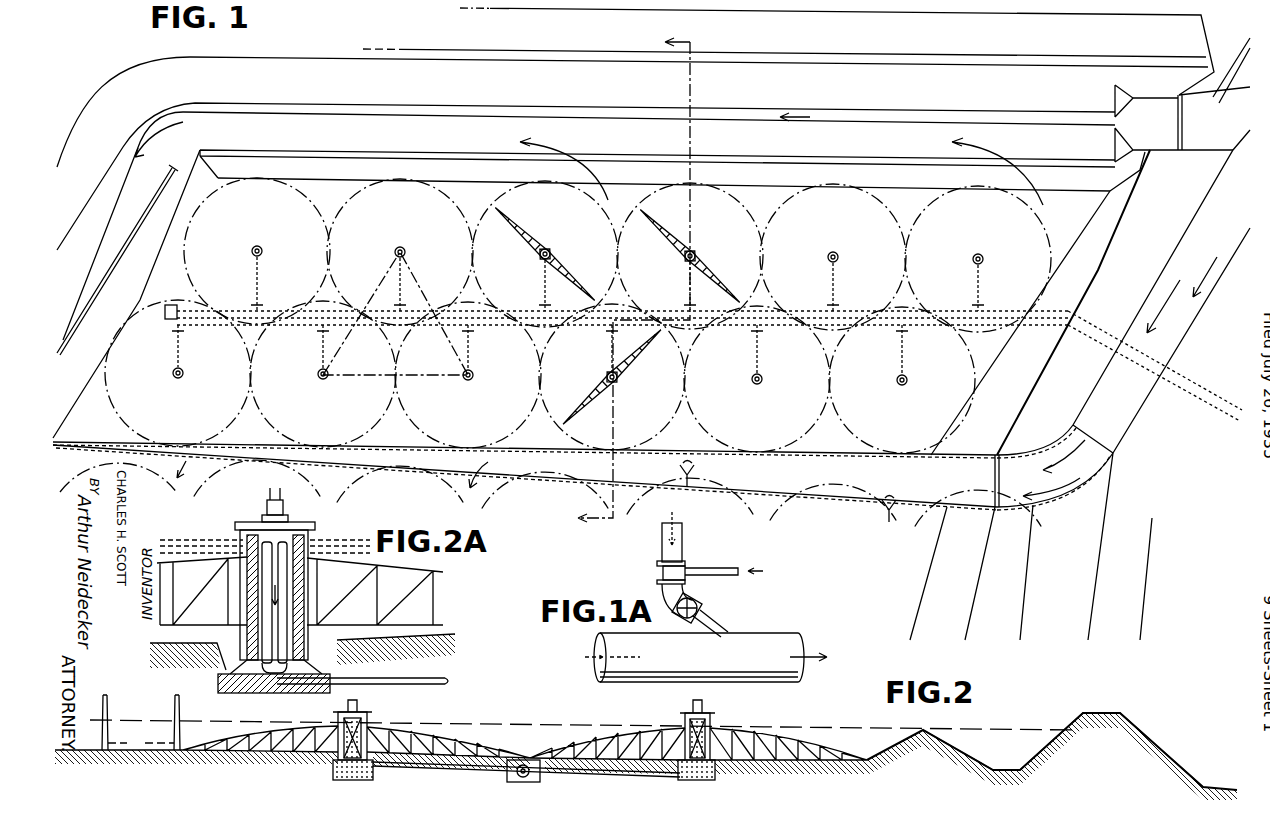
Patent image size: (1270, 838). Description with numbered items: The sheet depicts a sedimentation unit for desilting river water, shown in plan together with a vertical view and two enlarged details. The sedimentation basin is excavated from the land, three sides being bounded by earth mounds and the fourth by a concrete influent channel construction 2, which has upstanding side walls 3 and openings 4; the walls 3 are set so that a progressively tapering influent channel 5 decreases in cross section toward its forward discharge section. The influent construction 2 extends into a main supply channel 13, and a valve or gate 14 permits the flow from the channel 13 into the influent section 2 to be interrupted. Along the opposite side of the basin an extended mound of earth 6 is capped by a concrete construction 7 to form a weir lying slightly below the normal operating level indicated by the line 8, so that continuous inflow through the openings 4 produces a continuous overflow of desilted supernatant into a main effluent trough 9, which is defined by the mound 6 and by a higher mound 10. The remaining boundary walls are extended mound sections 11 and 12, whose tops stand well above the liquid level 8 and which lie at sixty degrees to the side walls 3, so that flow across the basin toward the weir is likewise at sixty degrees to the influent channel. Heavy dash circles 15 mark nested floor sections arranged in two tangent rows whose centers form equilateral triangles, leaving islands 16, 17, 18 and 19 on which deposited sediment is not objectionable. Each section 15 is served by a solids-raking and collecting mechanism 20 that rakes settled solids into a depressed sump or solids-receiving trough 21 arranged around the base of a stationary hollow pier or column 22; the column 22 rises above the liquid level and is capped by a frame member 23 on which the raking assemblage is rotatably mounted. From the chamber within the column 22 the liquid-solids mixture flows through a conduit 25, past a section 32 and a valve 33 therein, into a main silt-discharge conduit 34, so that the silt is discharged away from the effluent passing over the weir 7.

In FIG. 1, the concrete influent channel construction 2 is at (873, 484).
In FIG. 2, the concrete influent channel construction 2 is at (141, 743).
In FIG. 2, the upstanding side walls 3 is at (108, 699).
In FIG. 1, the openings 4 is at (901, 508).
In FIG. 1, the influent channel 5 is at (583, 467).
In FIG. 1, the mound or retaining section of earth 6 is at (672, 171).
In FIG. 2, the mound or retaining section of earth 6 is at (955, 757).
In FIG. 1, the concrete construction 7 is at (845, 164).
In FIG. 2, the concrete construction 7 is at (920, 728).
In FIG. 2, the normal operating level line 8 is at (827, 730).
In FIG. 1, the main effluent conduit or trough 9 is at (946, 116).
In FIG. 2, the main effluent conduit or trough 9 is at (1006, 760).
In FIG. 1, the higher mound or retaining section 10 is at (635, 174).
In FIG. 2, the higher mound or retaining section 10 is at (1111, 750).
In FIG. 1, the extended mound section 11 is at (126, 280).
In FIG. 1, the extended mound section 12 is at (1057, 395).
In FIG. 1, the main supply channel 13 is at (1161, 385).
In FIG. 1, the valve or gate 14 is at (994, 485).
In FIG. 1, the circles (sedimentation sections) 15 is at (340, 220).
In FIG. 1, the island 16 is at (578, 315).
In FIG. 1, the island 17 is at (664, 193).
In FIG. 1, the island 18 is at (1010, 415).
In FIG. 1, the island 19 is at (218, 178).
In FIG. 1, the solids-raking and collecting mechanism 20 is at (538, 247).
In FIG. 2A, the solids-raking and collecting mechanism 20 is at (300, 591).
In FIG. 2, the solids-raking and collecting mechanism 20 is at (455, 735).
In FIG. 2A, the depressed floor section or sump 21 is at (320, 660).
In FIG. 1, the hollow upstanding pier or column 22 is at (263, 252).
In FIG. 2A, the hollow upstanding pier or column 22 is at (299, 608).
In FIG. 2, the hollow upstanding pier or column 22 is at (367, 728).
In FIG. 2A, the frame member 23 is at (312, 528).
In FIG. 1A, the conduit 25 is at (682, 542).
In FIG. 2A, the conduit 25 is at (404, 684).
In FIG. 1A, the conduit section 32 is at (668, 593).
In FIG. 1A, the valve 33 is at (700, 611).
In FIG. 1, the main silt-discharge conduit 34 is at (862, 312).
In FIG. 1A, the main silt-discharge conduit 34 is at (766, 646).